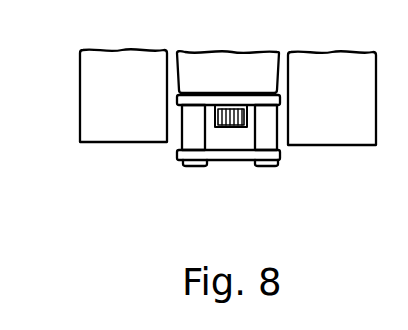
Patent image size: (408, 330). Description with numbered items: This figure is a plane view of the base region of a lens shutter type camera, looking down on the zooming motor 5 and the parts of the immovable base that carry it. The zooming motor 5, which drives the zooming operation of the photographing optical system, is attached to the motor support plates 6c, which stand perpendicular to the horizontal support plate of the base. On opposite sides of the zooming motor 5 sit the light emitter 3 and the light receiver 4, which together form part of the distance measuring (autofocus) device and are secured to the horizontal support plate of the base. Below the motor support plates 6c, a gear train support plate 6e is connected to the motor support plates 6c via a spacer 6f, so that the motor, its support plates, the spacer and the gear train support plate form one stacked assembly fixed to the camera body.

The light emitter 3 is at (351, 67).
The light receiver 4 is at (95, 80).
The zooming motor 5 is at (262, 60).
The motor support plates 6c is at (215, 98).
The gear train support plate 6e is at (241, 153).
The spacer 6f is at (193, 129).